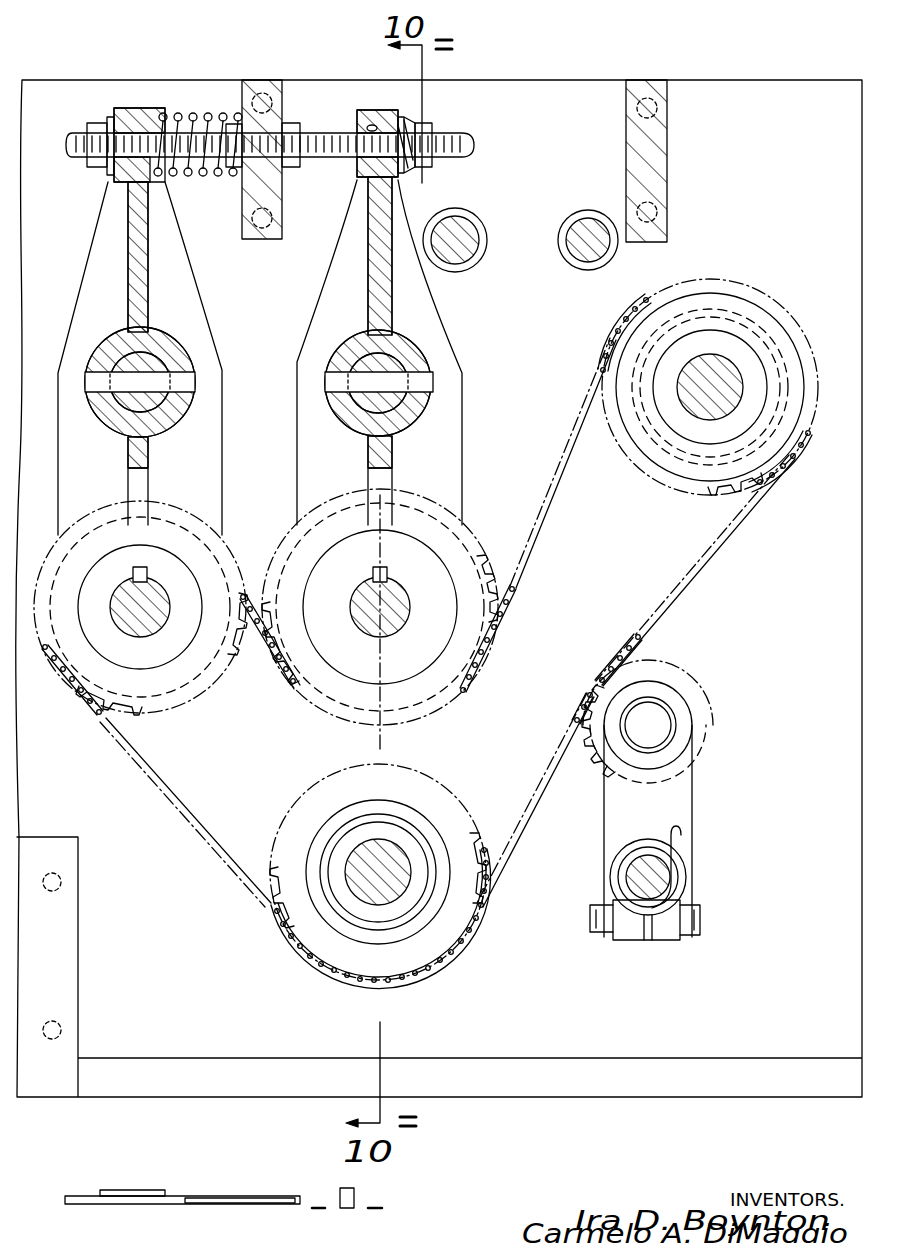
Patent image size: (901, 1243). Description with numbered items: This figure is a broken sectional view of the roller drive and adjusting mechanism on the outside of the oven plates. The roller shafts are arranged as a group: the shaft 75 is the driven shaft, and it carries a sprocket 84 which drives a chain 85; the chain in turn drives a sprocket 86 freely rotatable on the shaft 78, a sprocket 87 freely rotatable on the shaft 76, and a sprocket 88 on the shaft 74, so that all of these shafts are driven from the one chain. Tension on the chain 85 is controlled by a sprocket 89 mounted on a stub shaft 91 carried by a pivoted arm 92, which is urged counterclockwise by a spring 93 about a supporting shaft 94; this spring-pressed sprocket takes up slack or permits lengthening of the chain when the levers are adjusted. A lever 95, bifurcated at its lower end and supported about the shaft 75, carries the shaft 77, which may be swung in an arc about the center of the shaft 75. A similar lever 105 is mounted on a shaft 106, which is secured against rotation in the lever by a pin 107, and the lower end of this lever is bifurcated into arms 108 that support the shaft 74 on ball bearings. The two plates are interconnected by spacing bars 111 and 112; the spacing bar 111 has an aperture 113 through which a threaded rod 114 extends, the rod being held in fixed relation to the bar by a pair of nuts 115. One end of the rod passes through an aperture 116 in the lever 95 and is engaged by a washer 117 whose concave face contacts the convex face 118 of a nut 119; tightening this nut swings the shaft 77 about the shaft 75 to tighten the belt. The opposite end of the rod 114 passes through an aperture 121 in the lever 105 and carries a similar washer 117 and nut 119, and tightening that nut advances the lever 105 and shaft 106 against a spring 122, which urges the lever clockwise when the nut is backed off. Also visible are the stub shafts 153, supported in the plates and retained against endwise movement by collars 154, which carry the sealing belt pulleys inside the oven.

The shaft 74 is at (136, 598).
The shaft 75 is at (385, 598).
The shaft 76 is at (395, 853).
The shaft 77 is at (393, 367).
The shaft 78 is at (712, 356).
The sprocket 84 is at (268, 595).
The chain 85 is at (538, 576).
The sprocket 86 is at (718, 488).
The sprocket 87 is at (405, 790).
The sprocket 88 is at (162, 692).
The sprocket 89 is at (661, 669).
The stub shaft 91 is at (663, 715).
The pivoted arm 92 is at (685, 800).
The spring 93 is at (682, 840).
The supporting shaft 94 is at (660, 876).
The lever 95 is at (350, 282).
The lever 105 is at (172, 290).
The shaft 106 is at (152, 357).
The pin 107 is at (186, 381).
The arm 108 is at (148, 486).
The spacing bar 111 is at (298, 82).
The spacing bar 112 is at (650, 90).
The aperture 113 is at (278, 97).
The threaded rod 114 is at (332, 133).
The nut 115 is at (233, 122).
The aperture 116 is at (373, 126).
The washer 117 is at (112, 118).
The convex face 118 is at (410, 128).
The nut 119 is at (100, 122).
The aperture 121 is at (145, 130).
The spring 122 is at (193, 115).
The stub shaft 153 is at (465, 245).
The collar 154 is at (462, 214).